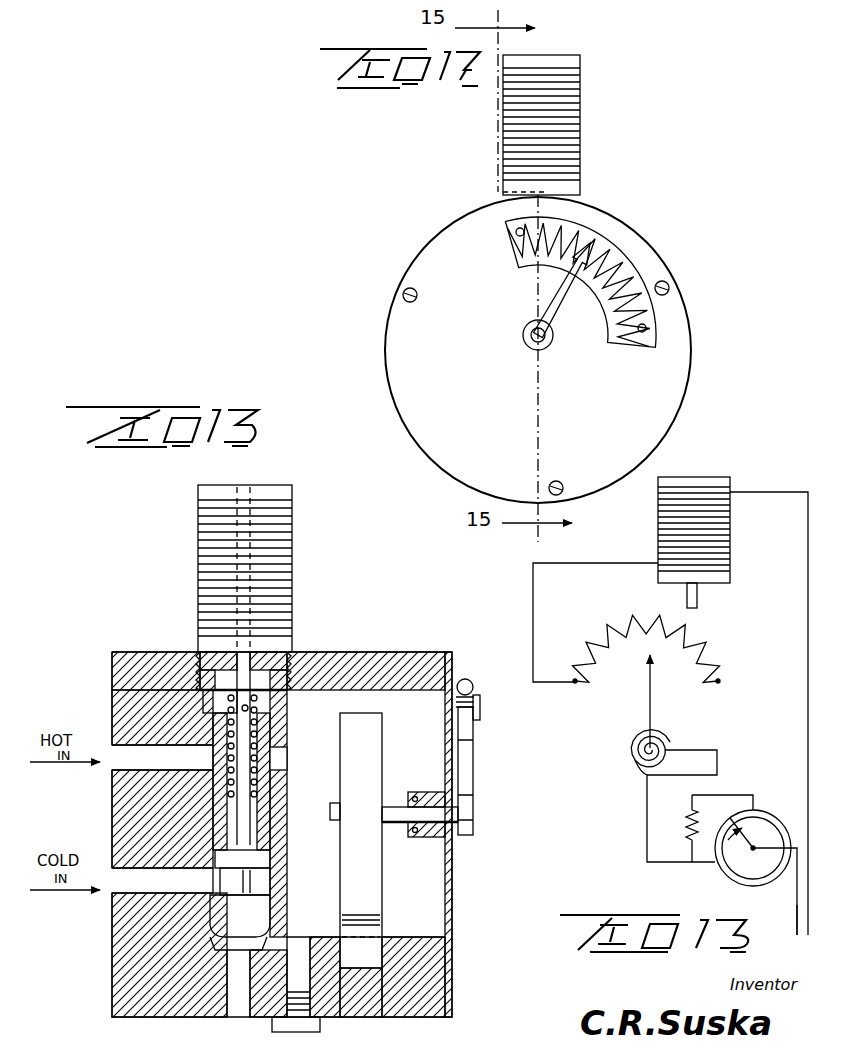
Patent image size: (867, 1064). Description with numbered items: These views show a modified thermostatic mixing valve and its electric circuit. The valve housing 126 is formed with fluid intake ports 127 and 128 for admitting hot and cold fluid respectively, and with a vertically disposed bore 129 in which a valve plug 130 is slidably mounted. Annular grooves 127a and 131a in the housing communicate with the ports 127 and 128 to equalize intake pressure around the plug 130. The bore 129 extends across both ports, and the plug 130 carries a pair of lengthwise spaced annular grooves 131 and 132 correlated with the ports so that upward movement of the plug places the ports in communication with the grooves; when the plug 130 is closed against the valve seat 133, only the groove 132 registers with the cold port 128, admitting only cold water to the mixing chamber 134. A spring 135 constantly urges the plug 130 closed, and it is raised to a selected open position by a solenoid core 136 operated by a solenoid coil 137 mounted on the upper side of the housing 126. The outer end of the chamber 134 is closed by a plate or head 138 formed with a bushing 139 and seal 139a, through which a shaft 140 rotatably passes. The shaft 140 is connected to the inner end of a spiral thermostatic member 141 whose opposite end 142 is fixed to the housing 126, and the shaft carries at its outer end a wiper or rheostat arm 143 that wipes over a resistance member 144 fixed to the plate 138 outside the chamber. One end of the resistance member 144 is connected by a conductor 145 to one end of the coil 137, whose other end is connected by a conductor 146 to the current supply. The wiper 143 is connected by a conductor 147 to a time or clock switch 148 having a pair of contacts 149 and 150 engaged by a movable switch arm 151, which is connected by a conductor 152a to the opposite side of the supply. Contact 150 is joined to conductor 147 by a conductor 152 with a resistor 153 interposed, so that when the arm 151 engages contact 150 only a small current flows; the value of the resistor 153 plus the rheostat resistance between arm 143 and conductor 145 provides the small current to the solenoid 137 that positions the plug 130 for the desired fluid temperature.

In FIG. 15, the valve housing 126 is at (320, 650).
In FIG. 15, the fluid intake port 127 is at (112, 752).
In FIG. 15, the annular groove 127a is at (270, 760).
In FIG. 15, the fluid intake port 128 is at (112, 885).
In FIG. 15, the bore 129 is at (282, 832).
In FIG. 15, the valve plug 130 is at (262, 812).
In FIG. 15, the annular groove 131 is at (212, 790).
In FIG. 15, the annular groove 131a is at (270, 880).
In FIG. 15, the annular groove 132 is at (177, 881).
In FIG. 15, the valve seat 133 is at (270, 945).
In FIG. 15, the mixing chamber 134 is at (396, 700).
In FIG. 15, the spring 135 is at (255, 706).
In FIG. 15, the solenoid core 136 is at (247, 652).
In FIG. 16, the solenoid core 136 is at (698, 598).
In FIG. 14, the solenoid coil 137 is at (582, 148).
In FIG. 15, the solenoid coil 137 is at (280, 537).
In FIG. 16, the solenoid coil 137 is at (730, 533).
In FIG. 14, the plate or head 138 is at (660, 415).
In FIG. 15, the plate or head 138 is at (453, 915).
In FIG. 15, the bushing 139 is at (440, 838).
In FIG. 15, the seal 139a is at (420, 838).
In FIG. 14, the shaft 140 is at (523, 340).
In FIG. 15, the shaft 140 is at (396, 810).
In FIG. 15, the spiral thermostatic member 141 is at (382, 742).
In FIG. 16, the spiral thermostatic member 141 is at (630, 748).
In FIG. 15, the opposite end of thermostatic member 142 is at (372, 952).
In FIG. 14, the wiper or rheostat arm 143 is at (558, 308).
In FIG. 15, the wiper or rheostat arm 143 is at (473, 778).
In FIG. 16, the wiper or rheostat arm 143 is at (652, 683).
In FIG. 14, the resistance member 144 is at (592, 280).
In FIG. 15, the resistance member 144 is at (470, 680).
In FIG. 16, the resistance member 144 is at (614, 648).
In FIG. 16, the conductor 145 is at (538, 595).
In FIG. 16, the conductor 146 is at (762, 490).
In FIG. 16, the conductor 147 is at (647, 808).
In FIG. 16, the time or clock switch 148 is at (724, 876).
In FIG. 16, the contact 149 is at (726, 886).
In FIG. 16, the contact 150 is at (758, 810).
In FIG. 16, the movable switch arm 151 is at (750, 846).
In FIG. 16, the conductor 152 is at (745, 786).
In FIG. 16, the conductor 152a is at (797, 915).
In FIG. 16, the resistor 153 is at (680, 830).